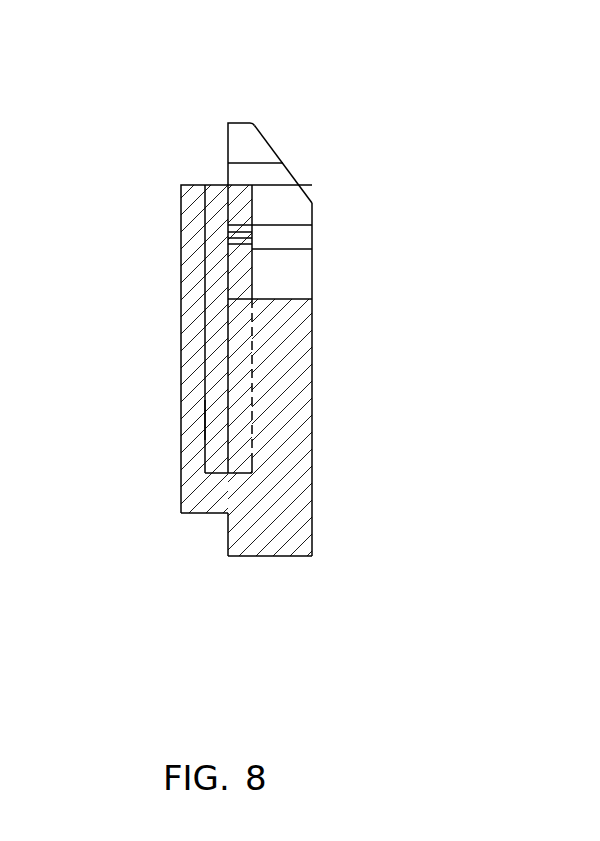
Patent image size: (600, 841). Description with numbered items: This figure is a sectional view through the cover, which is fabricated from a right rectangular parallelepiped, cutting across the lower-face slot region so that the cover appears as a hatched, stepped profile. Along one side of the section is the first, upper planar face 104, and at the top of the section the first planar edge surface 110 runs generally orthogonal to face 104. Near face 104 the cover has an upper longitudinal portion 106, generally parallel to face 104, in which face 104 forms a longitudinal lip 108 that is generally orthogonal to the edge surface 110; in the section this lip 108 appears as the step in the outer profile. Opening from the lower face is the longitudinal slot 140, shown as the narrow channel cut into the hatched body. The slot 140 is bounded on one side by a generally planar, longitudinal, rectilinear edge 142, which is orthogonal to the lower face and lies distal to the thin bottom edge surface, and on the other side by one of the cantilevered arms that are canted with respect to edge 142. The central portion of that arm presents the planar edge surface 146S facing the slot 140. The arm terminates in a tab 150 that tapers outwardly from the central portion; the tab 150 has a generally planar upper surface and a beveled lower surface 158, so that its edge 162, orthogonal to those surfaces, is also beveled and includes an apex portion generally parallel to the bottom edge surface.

The first planar face 104 is at (265, 556).
The upper longitudinal portion 106 is at (228, 540).
The longitudinal lip 108 is at (193, 516).
The first planar edge surface 110 is at (180, 347).
The longitudinal slot 140 is at (219, 215).
The rectilinear edge 142 is at (205, 407).
The planar edge surface 146S is at (313, 412).
The tab 150 is at (240, 112).
The beveled lower surface 158 is at (272, 147).
The beveled edge 162 is at (292, 177).